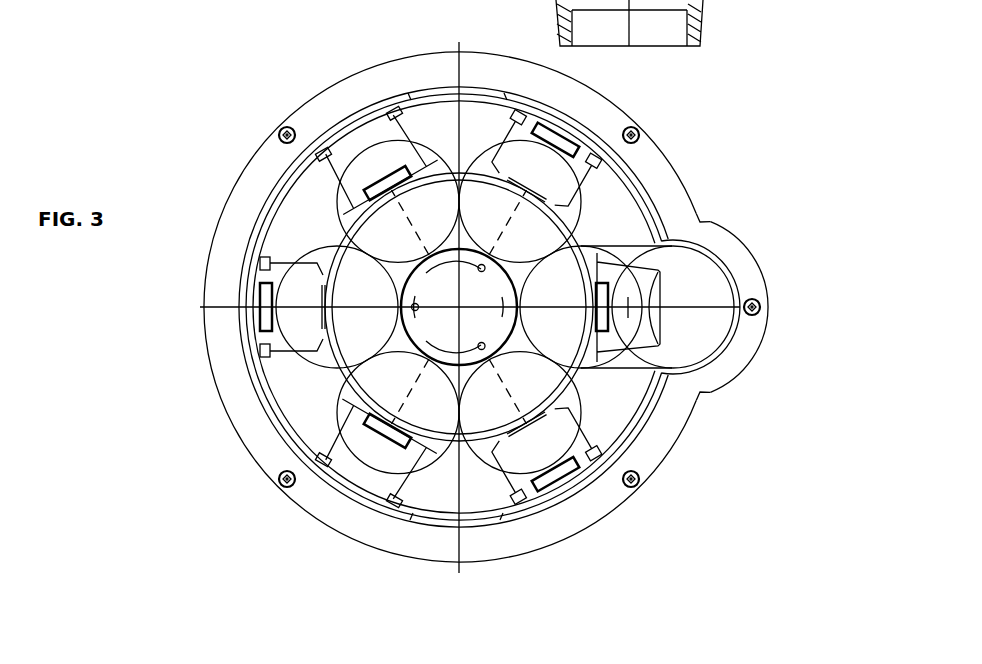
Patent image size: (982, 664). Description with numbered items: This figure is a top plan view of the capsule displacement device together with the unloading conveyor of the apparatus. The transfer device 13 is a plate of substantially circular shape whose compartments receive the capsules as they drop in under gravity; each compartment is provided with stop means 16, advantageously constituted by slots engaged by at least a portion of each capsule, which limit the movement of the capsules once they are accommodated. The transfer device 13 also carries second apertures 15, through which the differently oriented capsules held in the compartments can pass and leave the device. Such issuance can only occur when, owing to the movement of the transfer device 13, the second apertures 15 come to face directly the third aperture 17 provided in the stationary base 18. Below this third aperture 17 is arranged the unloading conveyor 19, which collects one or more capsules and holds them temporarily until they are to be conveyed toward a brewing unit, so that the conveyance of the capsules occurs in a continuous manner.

The transfer device 13 is at (447, 515).
The second apertures 15 is at (493, 140).
The stop means 16 is at (372, 188).
The third aperture 17 is at (600, 322).
The stationary base 18 is at (372, 245).
The unloading conveyor 19 is at (655, 238).